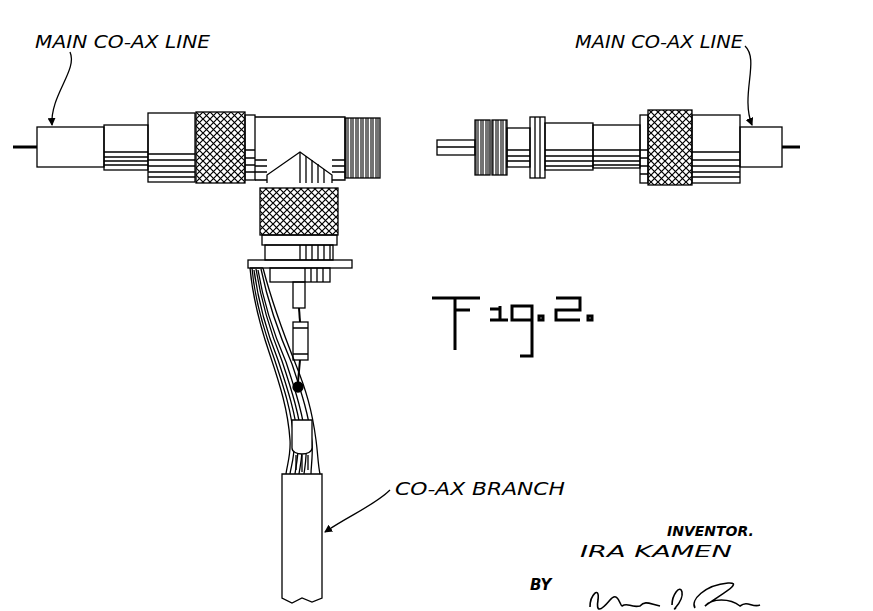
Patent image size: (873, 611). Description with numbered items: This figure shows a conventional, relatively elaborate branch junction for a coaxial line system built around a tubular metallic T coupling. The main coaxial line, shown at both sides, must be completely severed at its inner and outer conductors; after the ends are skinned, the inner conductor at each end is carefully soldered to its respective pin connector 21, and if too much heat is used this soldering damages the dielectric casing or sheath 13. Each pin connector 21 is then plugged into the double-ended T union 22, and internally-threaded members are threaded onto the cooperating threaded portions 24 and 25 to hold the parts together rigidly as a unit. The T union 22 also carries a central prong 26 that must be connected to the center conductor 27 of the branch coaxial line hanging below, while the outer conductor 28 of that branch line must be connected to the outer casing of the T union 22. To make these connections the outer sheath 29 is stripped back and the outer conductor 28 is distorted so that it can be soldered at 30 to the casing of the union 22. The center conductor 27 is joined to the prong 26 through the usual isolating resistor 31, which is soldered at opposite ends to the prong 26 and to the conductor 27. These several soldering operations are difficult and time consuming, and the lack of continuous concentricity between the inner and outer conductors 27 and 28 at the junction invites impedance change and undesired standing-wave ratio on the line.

The dielectric casing or sheath 13 is at (85, 127).
The pin connector 21 is at (450, 140).
The double-ended T union 22 is at (300, 117).
The threaded portion 24 is at (538, 117).
The threaded portion 25 is at (365, 117).
The central prong 26 is at (307, 296).
The center conductor 27 is at (306, 410).
The outer conductor 28 is at (320, 456).
The outer sheath 29 is at (324, 482).
The solder point 30 is at (255, 283).
The isolating resistor 31 is at (310, 342).